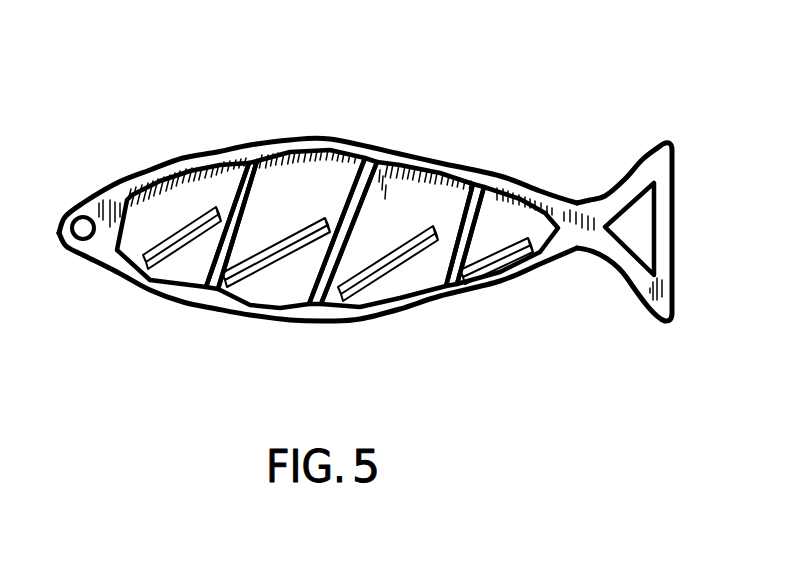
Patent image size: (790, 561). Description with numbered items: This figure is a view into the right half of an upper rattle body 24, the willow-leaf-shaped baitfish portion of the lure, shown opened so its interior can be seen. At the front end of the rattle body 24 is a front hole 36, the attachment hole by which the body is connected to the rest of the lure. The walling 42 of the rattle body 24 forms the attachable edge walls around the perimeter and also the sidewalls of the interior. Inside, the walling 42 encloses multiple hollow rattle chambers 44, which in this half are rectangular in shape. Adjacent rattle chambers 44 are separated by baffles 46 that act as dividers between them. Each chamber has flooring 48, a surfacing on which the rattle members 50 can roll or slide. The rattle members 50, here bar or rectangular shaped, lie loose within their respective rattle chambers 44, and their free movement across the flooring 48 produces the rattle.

The upper rattle body 24 is at (535, 188).
The front hole 36 is at (83, 234).
The walling 42 is at (337, 140).
The rattle chamber 44 is at (437, 280).
The baffle 46 is at (469, 213).
The flooring 48 is at (249, 292).
The rattle member 50 is at (197, 227).